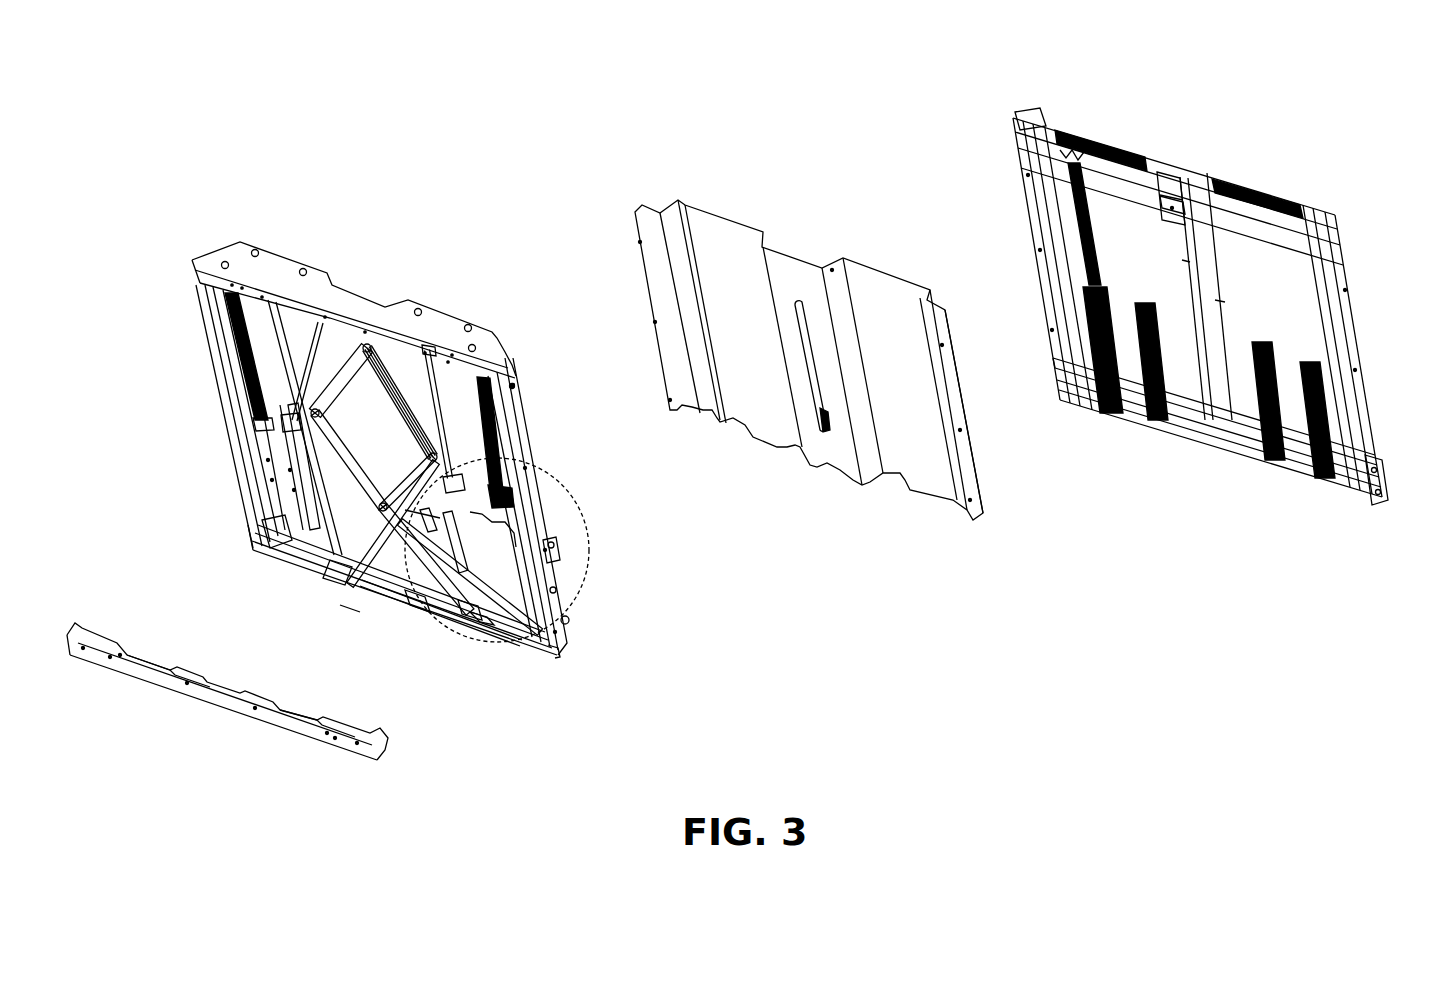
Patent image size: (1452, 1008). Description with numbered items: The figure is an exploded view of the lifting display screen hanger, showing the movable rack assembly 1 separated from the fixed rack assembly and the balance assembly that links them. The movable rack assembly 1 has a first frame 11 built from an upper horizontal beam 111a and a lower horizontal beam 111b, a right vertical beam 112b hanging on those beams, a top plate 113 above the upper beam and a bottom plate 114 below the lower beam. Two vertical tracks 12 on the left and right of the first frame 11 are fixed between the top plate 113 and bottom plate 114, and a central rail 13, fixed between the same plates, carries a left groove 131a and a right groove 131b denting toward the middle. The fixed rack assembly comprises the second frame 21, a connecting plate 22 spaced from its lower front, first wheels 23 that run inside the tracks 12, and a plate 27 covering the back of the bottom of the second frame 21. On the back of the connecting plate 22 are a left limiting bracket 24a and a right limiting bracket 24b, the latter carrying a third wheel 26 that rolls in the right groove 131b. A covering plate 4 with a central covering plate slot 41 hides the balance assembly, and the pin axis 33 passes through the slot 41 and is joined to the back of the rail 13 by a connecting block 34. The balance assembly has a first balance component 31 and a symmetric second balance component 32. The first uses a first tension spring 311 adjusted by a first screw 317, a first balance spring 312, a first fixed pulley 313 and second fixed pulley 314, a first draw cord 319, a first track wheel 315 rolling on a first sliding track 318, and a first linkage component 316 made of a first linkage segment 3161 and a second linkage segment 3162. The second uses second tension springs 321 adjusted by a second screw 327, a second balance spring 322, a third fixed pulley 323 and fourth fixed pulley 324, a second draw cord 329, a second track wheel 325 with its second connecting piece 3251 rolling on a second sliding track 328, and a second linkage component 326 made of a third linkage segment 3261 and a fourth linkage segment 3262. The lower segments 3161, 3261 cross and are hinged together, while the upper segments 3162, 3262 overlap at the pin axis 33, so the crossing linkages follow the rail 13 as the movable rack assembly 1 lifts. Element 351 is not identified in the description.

The movable rack assembly 1 is at (582, 530).
The covering plate 4 is at (930, 422).
The covering plate slot 41 is at (830, 433).
The first frame 11 is at (1253, 193).
The track 12 is at (1030, 240).
The rail 13 is at (1210, 397).
The second frame 21 is at (195, 262).
The connecting plate 22 is at (563, 563).
The first wheel 23 is at (560, 540).
The left limiting bracket 24a is at (458, 545).
The right limiting bracket 24b is at (365, 575).
The third wheel 26 is at (573, 618).
The plate 27 is at (207, 697).
The first balance component 31 is at (457, 603).
The second balance component 32 is at (270, 553).
The pin axis 33 is at (372, 330).
The connecting block 34 is at (1177, 175).
The upper horizontal beam 111a is at (1110, 142).
The lower horizontal beam 111b is at (1253, 427).
The right vertical beam 112b is at (1063, 190).
The top plate 113 is at (1153, 165).
The bottom plate 114 is at (1310, 480).
The left groove 131a is at (1247, 287).
The right groove 131b is at (1175, 282).
The first tension spring 311 is at (1327, 413).
The first balance spring 312 is at (517, 437).
The first fixed pulley 313 is at (570, 637).
The second fixed pulley 314 is at (420, 625).
The first track wheel 315 is at (480, 607).
The first linkage component 316 is at (287, 420).
The first linkage segment 3161 is at (563, 532).
The second linkage segment 3162 is at (320, 365).
The first screw 317 is at (507, 407).
The first sliding track 318 is at (490, 620).
The first draw cord 319 is at (560, 587).
The second tension spring 321 is at (1103, 413).
The second balance spring 322 is at (240, 380).
The third fixed pulley 323 is at (277, 523).
The fourth fixed pulley 324 is at (403, 590).
The second track wheel 325 is at (330, 580).
The second connecting piece 3251 is at (337, 613).
The second linkage component 326 is at (533, 463).
The third linkage segment 3261 is at (295, 505).
The fourth linkage segment 3262 is at (432, 375).
The second screw 327 is at (305, 272).
The second sliding track 328 is at (293, 567).
The second draw cord 329 is at (235, 468).
The guide strip 351 is at (1193, 167).